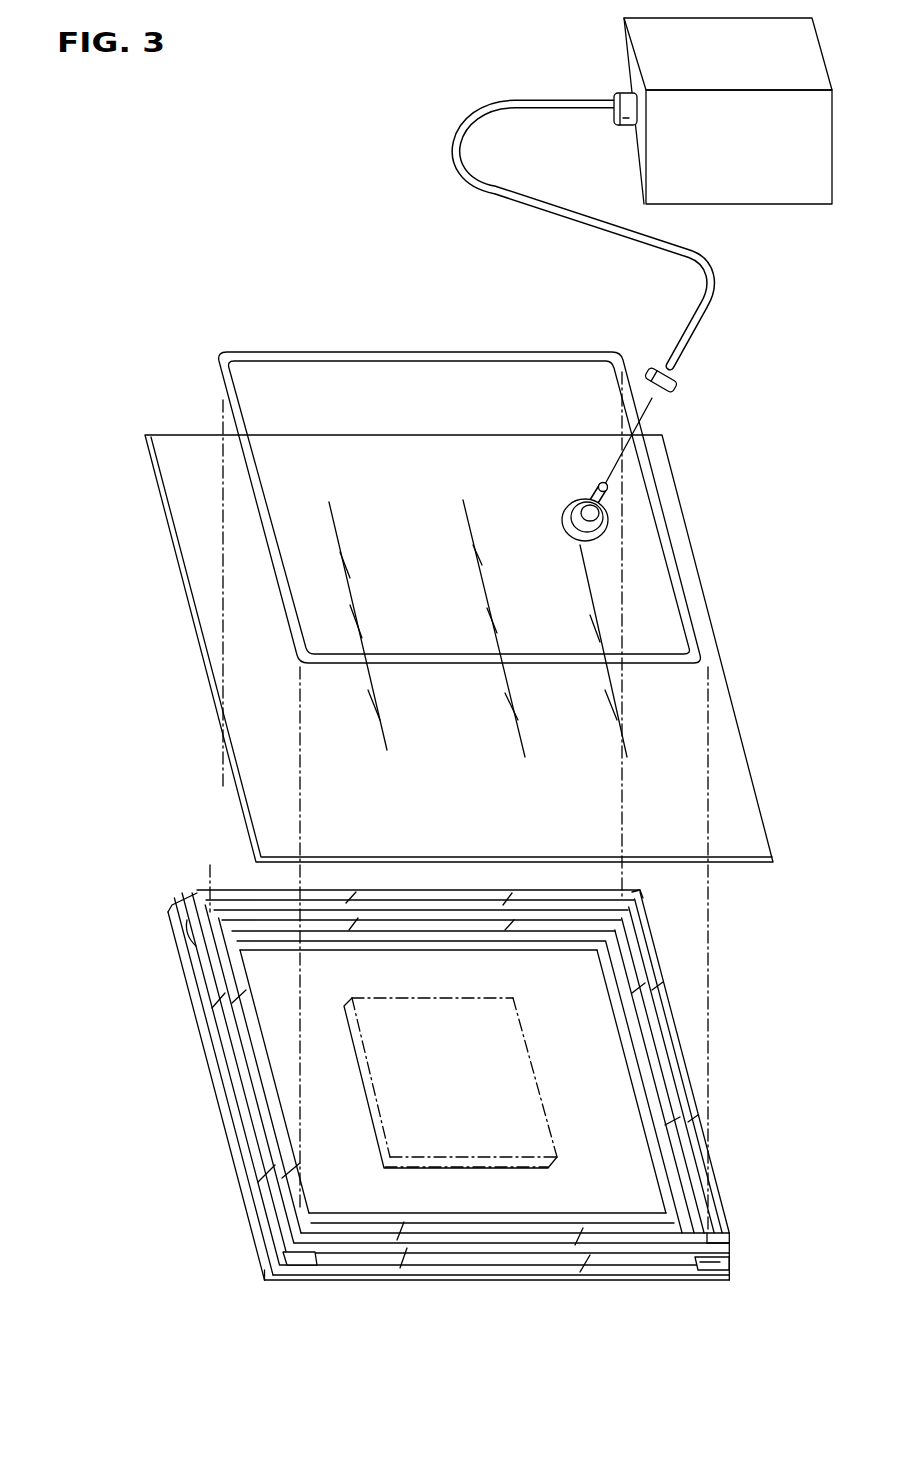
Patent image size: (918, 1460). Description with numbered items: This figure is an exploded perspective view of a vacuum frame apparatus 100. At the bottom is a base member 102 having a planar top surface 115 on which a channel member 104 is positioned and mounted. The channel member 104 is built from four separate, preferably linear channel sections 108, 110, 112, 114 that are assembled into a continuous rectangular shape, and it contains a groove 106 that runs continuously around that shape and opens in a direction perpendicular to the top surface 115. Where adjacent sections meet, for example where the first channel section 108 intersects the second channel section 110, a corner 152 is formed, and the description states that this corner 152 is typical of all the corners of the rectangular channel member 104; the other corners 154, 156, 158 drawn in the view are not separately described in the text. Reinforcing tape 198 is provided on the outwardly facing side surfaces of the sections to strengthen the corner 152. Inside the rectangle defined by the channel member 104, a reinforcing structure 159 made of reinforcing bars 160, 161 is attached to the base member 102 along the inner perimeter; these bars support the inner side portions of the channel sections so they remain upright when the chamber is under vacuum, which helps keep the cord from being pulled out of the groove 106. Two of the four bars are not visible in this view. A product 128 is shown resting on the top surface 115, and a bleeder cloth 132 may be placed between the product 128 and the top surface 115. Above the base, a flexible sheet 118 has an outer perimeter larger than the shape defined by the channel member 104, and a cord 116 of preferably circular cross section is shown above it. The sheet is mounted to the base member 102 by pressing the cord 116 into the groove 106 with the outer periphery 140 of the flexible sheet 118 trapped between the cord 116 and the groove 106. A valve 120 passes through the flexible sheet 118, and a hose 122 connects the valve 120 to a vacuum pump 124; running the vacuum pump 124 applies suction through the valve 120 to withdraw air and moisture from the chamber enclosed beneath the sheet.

The vacuum frame apparatus 100 is at (204, 197).
The base member 102 is at (192, 983).
The channel member 104 is at (253, 1133).
The groove 106 is at (240, 1037).
The first channel section 108 is at (237, 1077).
The second channel section 110 is at (423, 1255).
The channel section 112 is at (716, 1163).
The channel section 114 is at (238, 887).
The top surface 115 is at (298, 952).
The cord 116 is at (405, 352).
The flexible sheet 118 is at (750, 762).
The valve 120 is at (608, 528).
The hose 122 is at (696, 333).
The vacuum pump 124 is at (628, 38).
The product 128 is at (550, 1082).
The bleeder cloth 132 is at (574, 993).
The outer periphery 140 is at (405, 447).
The corner 152 is at (640, 893).
The corner clip 154 is at (723, 1235).
The corner clip 156 is at (288, 1250).
The corner clip 158 is at (197, 890).
The reinforcing structure 159 is at (662, 1172).
The reinforcing bar 160 is at (372, 943).
The reinforcing bar 161 is at (628, 1030).
The reinforcing tape 198 is at (270, 1247).